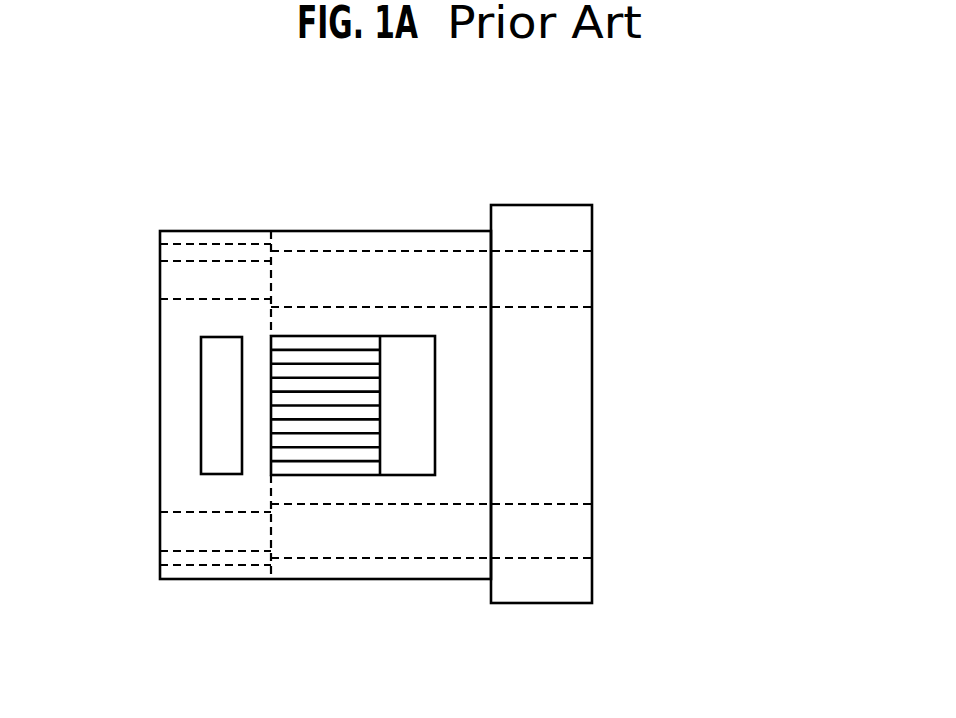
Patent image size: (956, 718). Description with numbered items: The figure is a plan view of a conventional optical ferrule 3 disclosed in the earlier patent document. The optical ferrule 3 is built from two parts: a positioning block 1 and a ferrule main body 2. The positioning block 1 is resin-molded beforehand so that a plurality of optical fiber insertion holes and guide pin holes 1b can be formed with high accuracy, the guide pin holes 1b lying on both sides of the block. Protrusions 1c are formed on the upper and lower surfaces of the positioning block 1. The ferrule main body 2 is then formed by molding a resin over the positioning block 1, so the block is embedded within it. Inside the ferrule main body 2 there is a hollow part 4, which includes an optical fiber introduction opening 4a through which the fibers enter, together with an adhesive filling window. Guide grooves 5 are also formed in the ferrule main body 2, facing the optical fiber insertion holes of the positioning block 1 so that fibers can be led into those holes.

The positioning block 1 is at (273, 328).
The guide pin holes 1b is at (197, 262).
The protrusions 1c is at (220, 375).
The ferrule main body 2 is at (438, 230).
The optical ferrule 3 is at (332, 195).
The hollow part 4 is at (425, 347).
The optical fiber introduction opening 4a is at (397, 345).
The guide grooves 5 is at (317, 442).